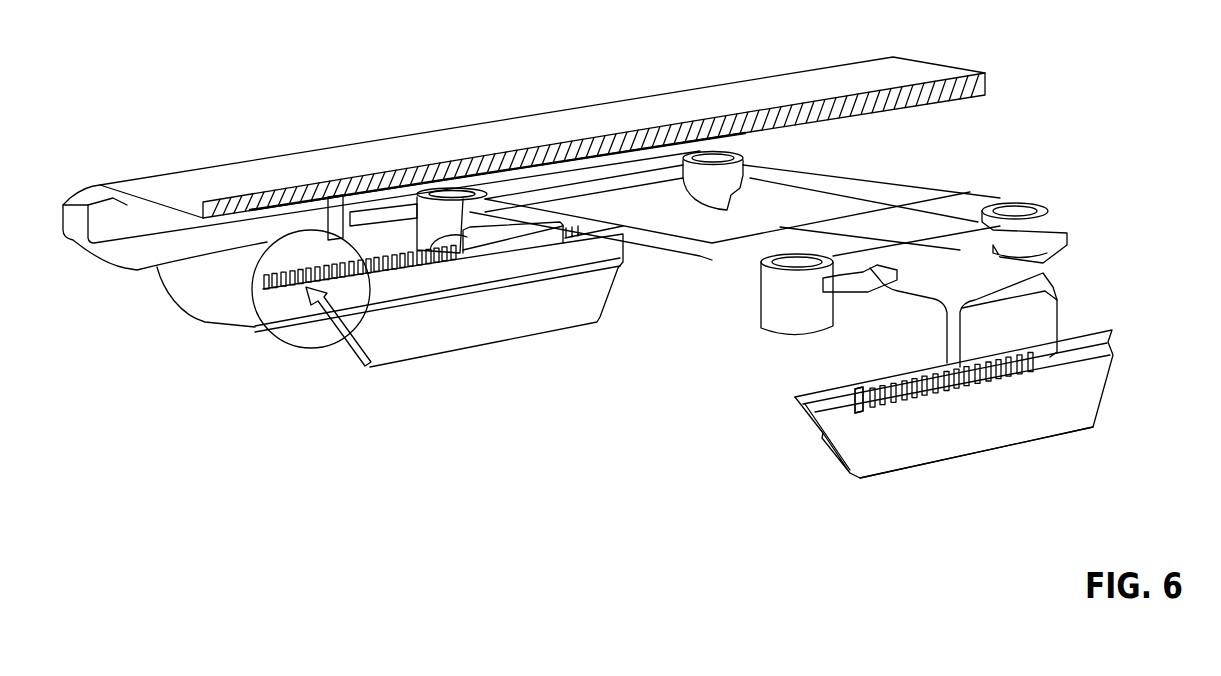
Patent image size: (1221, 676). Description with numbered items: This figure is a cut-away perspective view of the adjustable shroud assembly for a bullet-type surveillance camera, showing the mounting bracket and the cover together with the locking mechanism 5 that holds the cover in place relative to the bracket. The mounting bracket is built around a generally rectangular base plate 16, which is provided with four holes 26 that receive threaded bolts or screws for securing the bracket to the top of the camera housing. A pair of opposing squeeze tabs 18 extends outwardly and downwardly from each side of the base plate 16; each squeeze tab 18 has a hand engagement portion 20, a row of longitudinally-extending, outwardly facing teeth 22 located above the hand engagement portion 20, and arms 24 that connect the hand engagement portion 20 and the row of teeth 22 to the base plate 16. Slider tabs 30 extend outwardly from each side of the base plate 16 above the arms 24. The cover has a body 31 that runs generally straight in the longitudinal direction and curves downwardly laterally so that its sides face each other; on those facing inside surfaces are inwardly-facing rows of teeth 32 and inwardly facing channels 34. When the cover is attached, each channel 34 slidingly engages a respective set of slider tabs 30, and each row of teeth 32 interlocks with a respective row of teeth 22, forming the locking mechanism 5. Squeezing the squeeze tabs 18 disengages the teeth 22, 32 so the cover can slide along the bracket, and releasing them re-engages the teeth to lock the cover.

The locking mechanism 5 is at (266, 333).
The base plate 16 is at (940, 187).
The squeeze tabs 18 is at (610, 267).
The hand engagement portion 20 is at (990, 433).
The row of teeth 22 is at (880, 393).
The arms 24 is at (1058, 297).
The holes 26 is at (448, 190).
The slider tabs 30 is at (860, 273).
The body 31 is at (943, 65).
The rows of teeth 32 is at (293, 300).
The channels 34 is at (369, 210).